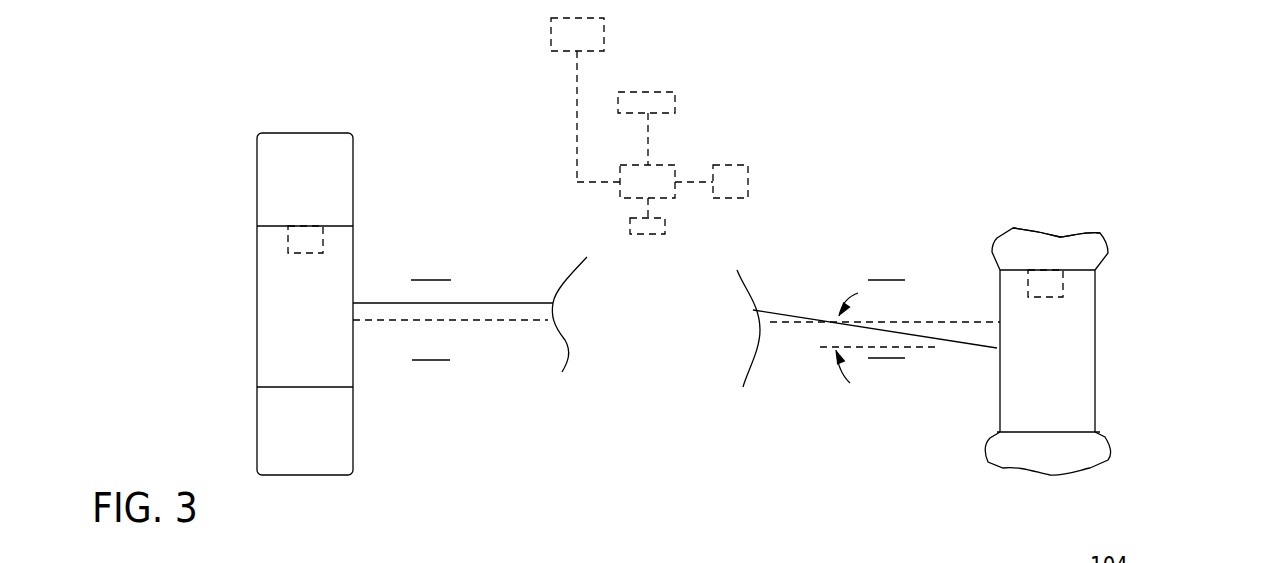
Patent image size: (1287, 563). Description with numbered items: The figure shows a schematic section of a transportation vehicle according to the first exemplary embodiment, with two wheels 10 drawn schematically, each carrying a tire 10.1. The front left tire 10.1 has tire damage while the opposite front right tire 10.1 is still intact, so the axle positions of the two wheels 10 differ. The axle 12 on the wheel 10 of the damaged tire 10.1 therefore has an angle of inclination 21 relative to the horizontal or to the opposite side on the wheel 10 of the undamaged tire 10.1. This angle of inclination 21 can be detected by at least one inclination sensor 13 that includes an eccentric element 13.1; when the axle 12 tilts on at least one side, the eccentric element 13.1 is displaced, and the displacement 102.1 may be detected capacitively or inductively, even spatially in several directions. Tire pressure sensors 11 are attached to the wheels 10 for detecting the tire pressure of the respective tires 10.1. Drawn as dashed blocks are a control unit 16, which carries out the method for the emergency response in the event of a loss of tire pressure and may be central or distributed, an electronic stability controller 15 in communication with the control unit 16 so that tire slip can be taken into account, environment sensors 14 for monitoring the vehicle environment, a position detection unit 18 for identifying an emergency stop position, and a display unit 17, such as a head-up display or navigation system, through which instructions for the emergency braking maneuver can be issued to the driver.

The wheel 10 is at (218, 298).
The tire 10.1 is at (288, 203).
The tire pressure sensor 11 is at (297, 242).
The axle 12 is at (496, 303).
The inclination sensor 13 is at (436, 265).
The eccentric element 13.1 is at (400, 334).
The environment sensors 14 is at (663, 98).
The electronic stability controller 15 is at (740, 182).
The control unit 16 is at (660, 173).
The display unit 17 is at (563, 35).
The position detection unit 18 is at (649, 225).
The displacement 102.1 is at (827, 282).
The angle of inclination 21 is at (833, 337).